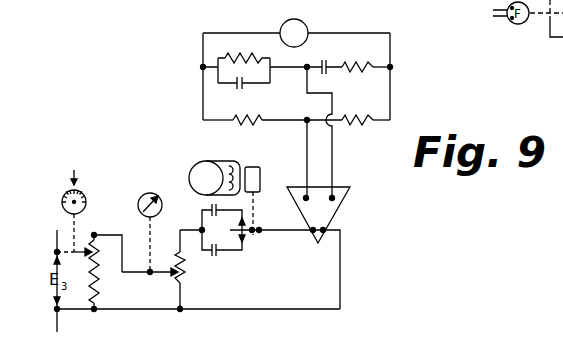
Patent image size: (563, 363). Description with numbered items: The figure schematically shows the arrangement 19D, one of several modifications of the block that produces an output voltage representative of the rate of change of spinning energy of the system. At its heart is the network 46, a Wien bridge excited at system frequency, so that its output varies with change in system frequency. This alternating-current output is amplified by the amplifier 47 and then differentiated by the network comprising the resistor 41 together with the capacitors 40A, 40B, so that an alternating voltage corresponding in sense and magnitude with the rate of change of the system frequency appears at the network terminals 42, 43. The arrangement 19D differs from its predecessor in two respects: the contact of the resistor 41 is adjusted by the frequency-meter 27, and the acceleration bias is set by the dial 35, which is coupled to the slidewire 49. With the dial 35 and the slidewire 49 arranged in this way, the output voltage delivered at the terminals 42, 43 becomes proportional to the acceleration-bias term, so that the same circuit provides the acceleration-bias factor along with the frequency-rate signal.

The arrangement 19D is at (170, 146).
The network 46 is at (290, 103).
The amplifier 47 is at (331, 211).
The capacitor 40A is at (256, 208).
The capacitor 40B is at (218, 257).
The resistor 41 is at (184, 281).
The slidewire 49 is at (97, 281).
The network terminal 42 is at (56, 251).
The network terminal 43 is at (56, 310).
The dial 35 is at (81, 211).
The frequency-meter 27 is at (139, 203).